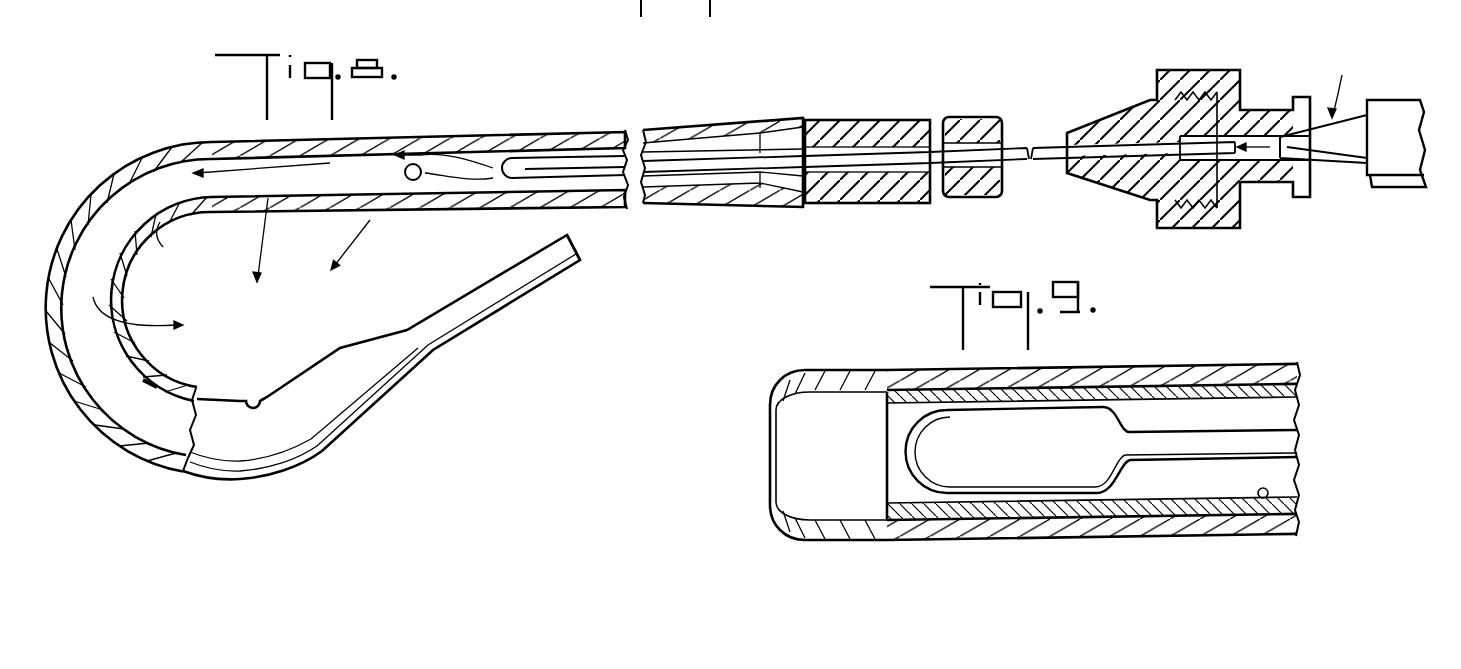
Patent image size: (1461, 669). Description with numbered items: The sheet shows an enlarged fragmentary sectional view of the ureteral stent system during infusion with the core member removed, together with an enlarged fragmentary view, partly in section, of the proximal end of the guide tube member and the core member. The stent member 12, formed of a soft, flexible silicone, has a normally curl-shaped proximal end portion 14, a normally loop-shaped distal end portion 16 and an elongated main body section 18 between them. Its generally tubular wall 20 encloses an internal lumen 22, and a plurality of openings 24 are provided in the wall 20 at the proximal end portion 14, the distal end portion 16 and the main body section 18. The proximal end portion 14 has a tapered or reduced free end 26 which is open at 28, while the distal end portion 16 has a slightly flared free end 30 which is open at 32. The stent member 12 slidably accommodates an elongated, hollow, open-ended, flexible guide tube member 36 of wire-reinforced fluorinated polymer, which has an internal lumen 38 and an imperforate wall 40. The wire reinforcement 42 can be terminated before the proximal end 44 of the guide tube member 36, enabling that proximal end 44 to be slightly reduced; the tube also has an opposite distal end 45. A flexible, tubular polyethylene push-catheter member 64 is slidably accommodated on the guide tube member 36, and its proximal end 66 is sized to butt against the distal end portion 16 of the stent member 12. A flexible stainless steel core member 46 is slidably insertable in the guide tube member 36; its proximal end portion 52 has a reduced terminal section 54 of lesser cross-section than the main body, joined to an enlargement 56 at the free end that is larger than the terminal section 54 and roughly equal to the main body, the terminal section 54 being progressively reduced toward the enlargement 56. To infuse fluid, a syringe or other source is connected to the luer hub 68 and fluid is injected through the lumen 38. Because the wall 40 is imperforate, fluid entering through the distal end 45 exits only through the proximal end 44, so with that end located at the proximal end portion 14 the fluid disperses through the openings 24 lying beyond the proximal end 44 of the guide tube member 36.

In FIG. 8, the stent member 12 is at (478, 122).
In FIG. 8, the proximal end portion 14 is at (207, 476).
In FIG. 8, the distal end portion 16 is at (690, 130).
In FIG. 8, the main body section 18 is at (445, 136).
In FIG. 8, the tubular wall 20 is at (585, 132).
In FIG. 8, the lumen 22 is at (378, 166).
In FIG. 8, the openings 24 is at (290, 183).
In FIG. 8, the free end 26 is at (441, 351).
In FIG. 8, the opening 28 is at (580, 252).
In FIG. 8, the free end 30 is at (762, 203).
In FIG. 8, the opening 32 is at (798, 184).
In FIG. 8, the guide tube member 36 is at (672, 178).
In FIG. 9, the guide tube member 36 is at (1240, 358).
In FIG. 9, the lumen 38 is at (845, 471).
In FIG. 8, the imperforate wall 40 is at (760, 133).
In FIG. 9, the imperforate wall 40 is at (1150, 366).
In FIG. 9, the wire reinforcement 42 is at (1266, 504).
In FIG. 8, the proximal end 44 is at (505, 150).
In FIG. 9, the proximal end 44 is at (820, 374).
In FIG. 8, the distal end 45 is at (1232, 163).
In FIG. 9, the core member 46 is at (1292, 425).
In FIG. 9, the proximal end portion 52 is at (1150, 470).
In FIG. 9, the terminal section 54 is at (1213, 456).
In FIG. 9, the enlargement 56 is at (919, 420).
In FIG. 8, the push-catheter member 64 is at (905, 120).
In FIG. 8, the proximal end 66 is at (815, 120).
In FIG. 8, the luer hub 68 is at (1212, 68).